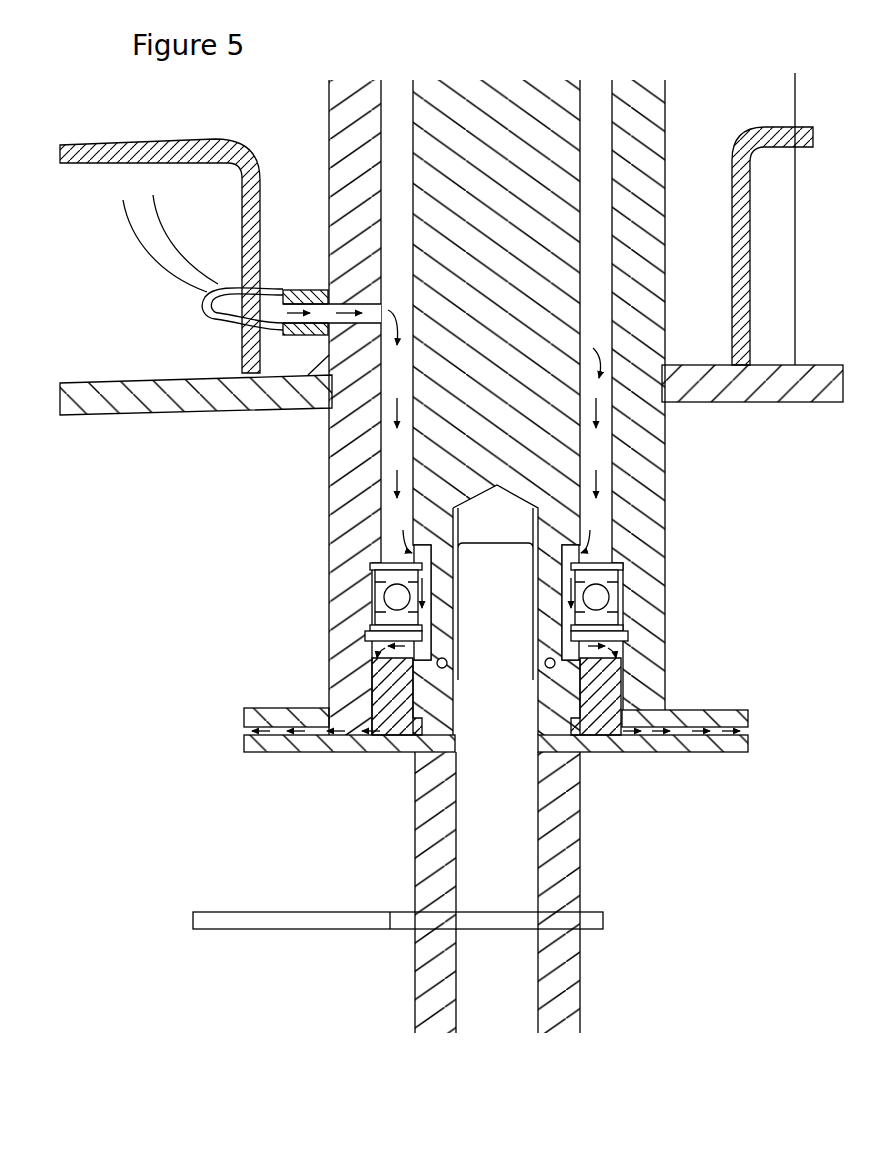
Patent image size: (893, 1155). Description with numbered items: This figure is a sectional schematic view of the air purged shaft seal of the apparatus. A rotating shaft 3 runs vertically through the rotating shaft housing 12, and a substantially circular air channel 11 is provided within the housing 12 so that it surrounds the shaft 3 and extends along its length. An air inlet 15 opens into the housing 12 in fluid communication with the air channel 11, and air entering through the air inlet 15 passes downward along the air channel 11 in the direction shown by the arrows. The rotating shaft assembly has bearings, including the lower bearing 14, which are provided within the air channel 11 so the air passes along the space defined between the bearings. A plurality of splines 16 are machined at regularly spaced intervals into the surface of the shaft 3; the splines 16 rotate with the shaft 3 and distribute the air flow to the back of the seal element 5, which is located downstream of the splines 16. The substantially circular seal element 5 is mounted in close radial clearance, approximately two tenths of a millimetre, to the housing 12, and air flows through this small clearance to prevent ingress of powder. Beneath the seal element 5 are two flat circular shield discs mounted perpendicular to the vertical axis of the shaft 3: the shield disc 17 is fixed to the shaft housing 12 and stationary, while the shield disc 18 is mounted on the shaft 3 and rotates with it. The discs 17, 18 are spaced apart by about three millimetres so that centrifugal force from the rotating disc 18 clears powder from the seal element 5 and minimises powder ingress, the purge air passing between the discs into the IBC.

The rotating shaft 3 is at (562, 457).
The seal element 5 is at (602, 692).
The air channel 11 is at (397, 525).
The rotating shaft housing 12 is at (633, 522).
The lower bearing 14 is at (615, 602).
The air inlet 15 is at (252, 310).
The splines 16 is at (595, 623).
The shield disc 17 is at (735, 712).
The shield disc 18 is at (730, 752).